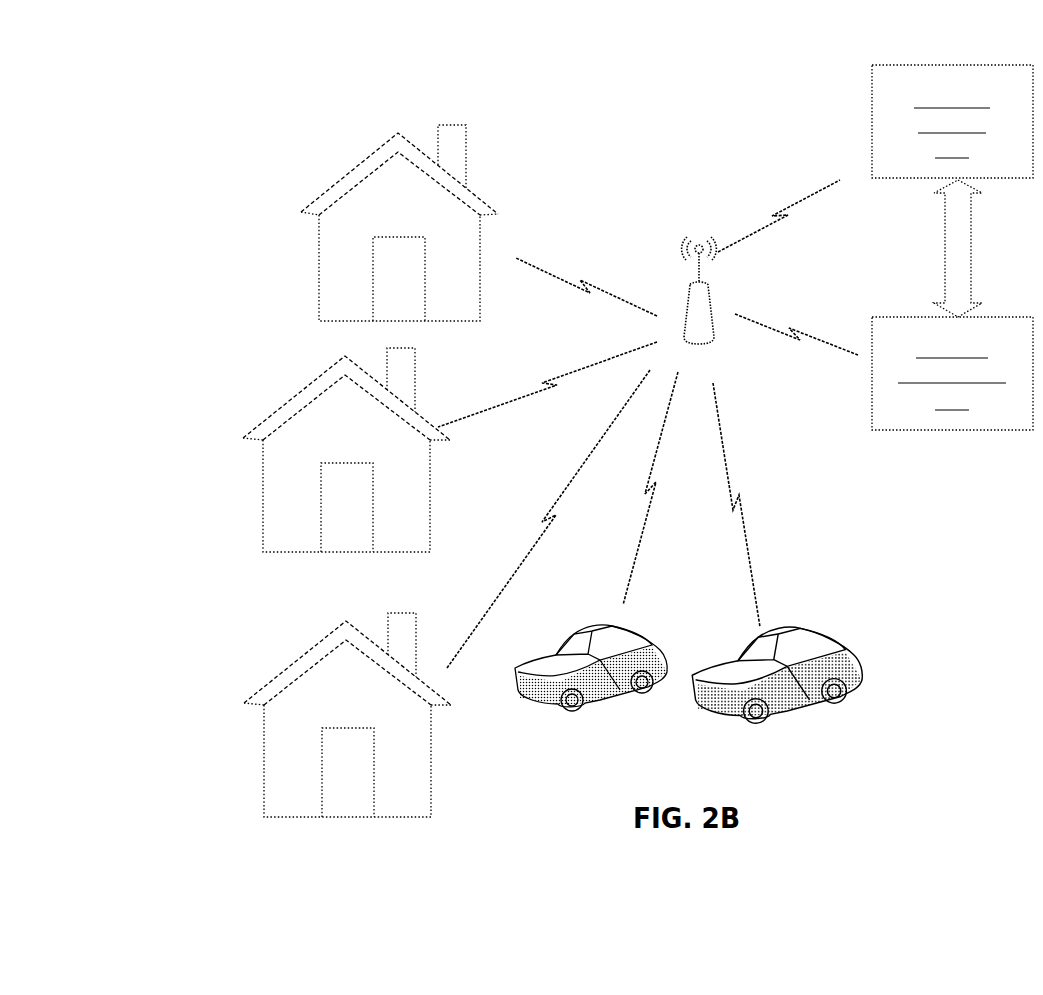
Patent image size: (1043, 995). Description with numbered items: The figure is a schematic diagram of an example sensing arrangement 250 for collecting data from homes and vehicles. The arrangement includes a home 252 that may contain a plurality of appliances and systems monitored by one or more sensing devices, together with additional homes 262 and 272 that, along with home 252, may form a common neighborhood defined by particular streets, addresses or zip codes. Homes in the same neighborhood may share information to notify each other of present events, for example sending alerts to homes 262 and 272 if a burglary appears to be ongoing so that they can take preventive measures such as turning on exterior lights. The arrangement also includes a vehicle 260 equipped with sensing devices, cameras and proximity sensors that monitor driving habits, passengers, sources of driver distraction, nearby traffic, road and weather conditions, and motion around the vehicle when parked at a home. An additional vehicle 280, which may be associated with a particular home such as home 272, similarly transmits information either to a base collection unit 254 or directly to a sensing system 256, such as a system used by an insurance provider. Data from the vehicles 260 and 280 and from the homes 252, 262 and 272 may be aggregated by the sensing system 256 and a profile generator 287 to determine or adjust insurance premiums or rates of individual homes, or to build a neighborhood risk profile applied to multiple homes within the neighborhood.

The sensing arrangement 250 is at (219, 196).
The home 252 is at (330, 283).
The base collection unit 254 is at (683, 293).
The sensing system 256 is at (952, 121).
The profile generator 287 is at (952, 373).
The home 262 is at (263, 512).
The home 272 is at (278, 746).
The vehicle 280 is at (567, 723).
The vehicle 260 is at (812, 712).